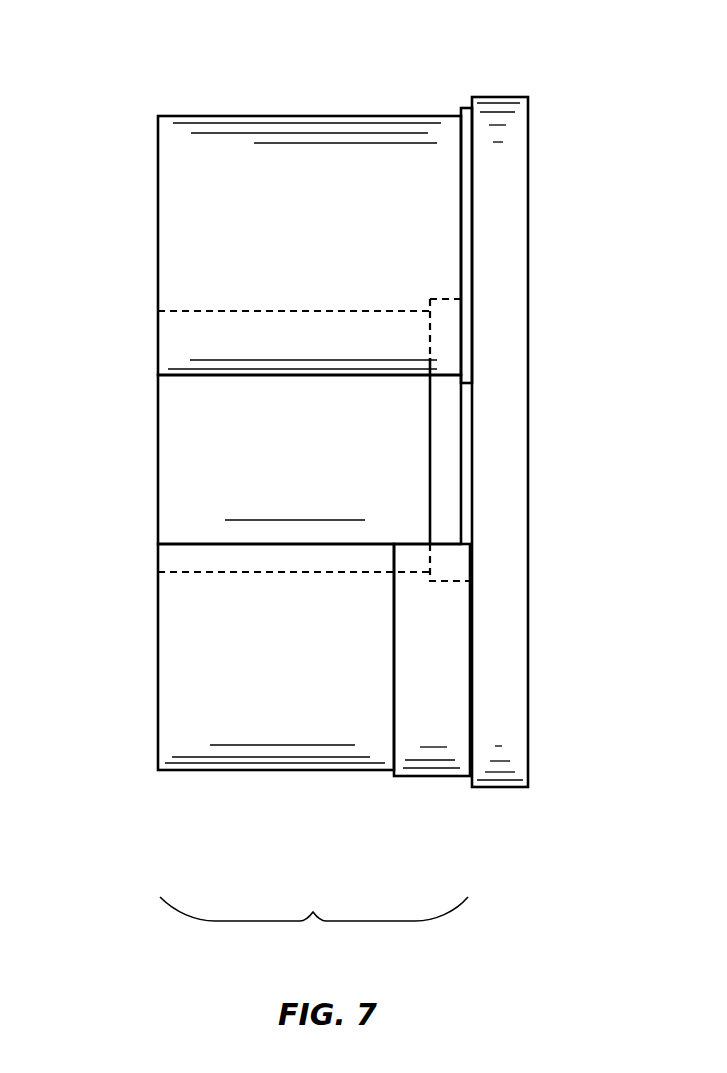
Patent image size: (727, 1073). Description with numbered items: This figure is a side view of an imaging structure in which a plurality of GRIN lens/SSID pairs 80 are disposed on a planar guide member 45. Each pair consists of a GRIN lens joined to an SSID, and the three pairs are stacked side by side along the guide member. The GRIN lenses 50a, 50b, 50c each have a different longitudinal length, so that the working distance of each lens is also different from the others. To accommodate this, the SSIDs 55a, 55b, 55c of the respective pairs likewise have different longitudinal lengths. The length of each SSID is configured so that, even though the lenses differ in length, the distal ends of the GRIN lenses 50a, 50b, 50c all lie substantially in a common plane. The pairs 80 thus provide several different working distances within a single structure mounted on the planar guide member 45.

The GRIN lens 50a is at (220, 145).
The GRIN lens 50b is at (182, 462).
The GRIN lens 50c is at (263, 750).
The SSID 55a is at (461, 108).
The SSID 55b is at (453, 470).
The SSID 55c is at (430, 765).
The planar guide member 45 is at (510, 175).
The GRIN lens/SSID pairs 80 is at (314, 926).